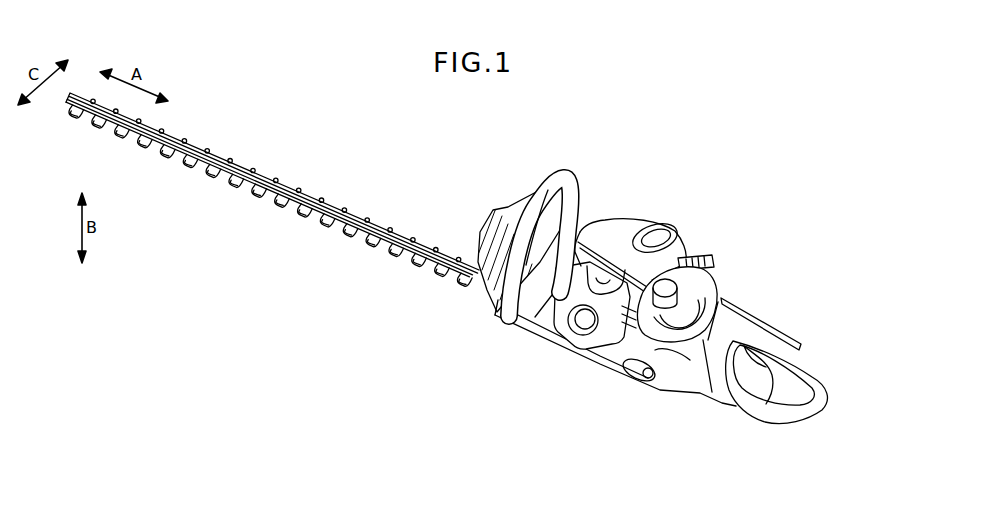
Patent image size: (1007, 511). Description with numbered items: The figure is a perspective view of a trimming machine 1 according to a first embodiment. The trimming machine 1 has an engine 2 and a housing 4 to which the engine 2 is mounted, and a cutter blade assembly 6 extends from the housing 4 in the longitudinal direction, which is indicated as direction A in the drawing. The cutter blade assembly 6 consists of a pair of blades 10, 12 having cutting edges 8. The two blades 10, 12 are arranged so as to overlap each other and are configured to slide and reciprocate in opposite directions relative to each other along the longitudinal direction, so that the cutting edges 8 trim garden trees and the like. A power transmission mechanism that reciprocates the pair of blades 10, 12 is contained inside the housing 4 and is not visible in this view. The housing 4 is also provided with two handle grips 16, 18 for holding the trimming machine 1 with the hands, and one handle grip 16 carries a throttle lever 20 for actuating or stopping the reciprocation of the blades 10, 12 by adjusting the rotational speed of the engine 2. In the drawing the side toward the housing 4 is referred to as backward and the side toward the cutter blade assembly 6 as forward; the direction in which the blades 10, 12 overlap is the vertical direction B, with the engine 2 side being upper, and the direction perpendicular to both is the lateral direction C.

The trimming machine 1 is at (370, 100).
The engine 2 is at (673, 226).
The housing 4 is at (676, 393).
The cutter blade assembly 6 is at (240, 148).
The cutting edges 8 is at (282, 200).
The blade 10 is at (377, 248).
The blade 12 is at (364, 240).
The handle grip 16 is at (826, 370).
The handle grip 18 is at (575, 182).
The throttle lever 20 is at (767, 402).